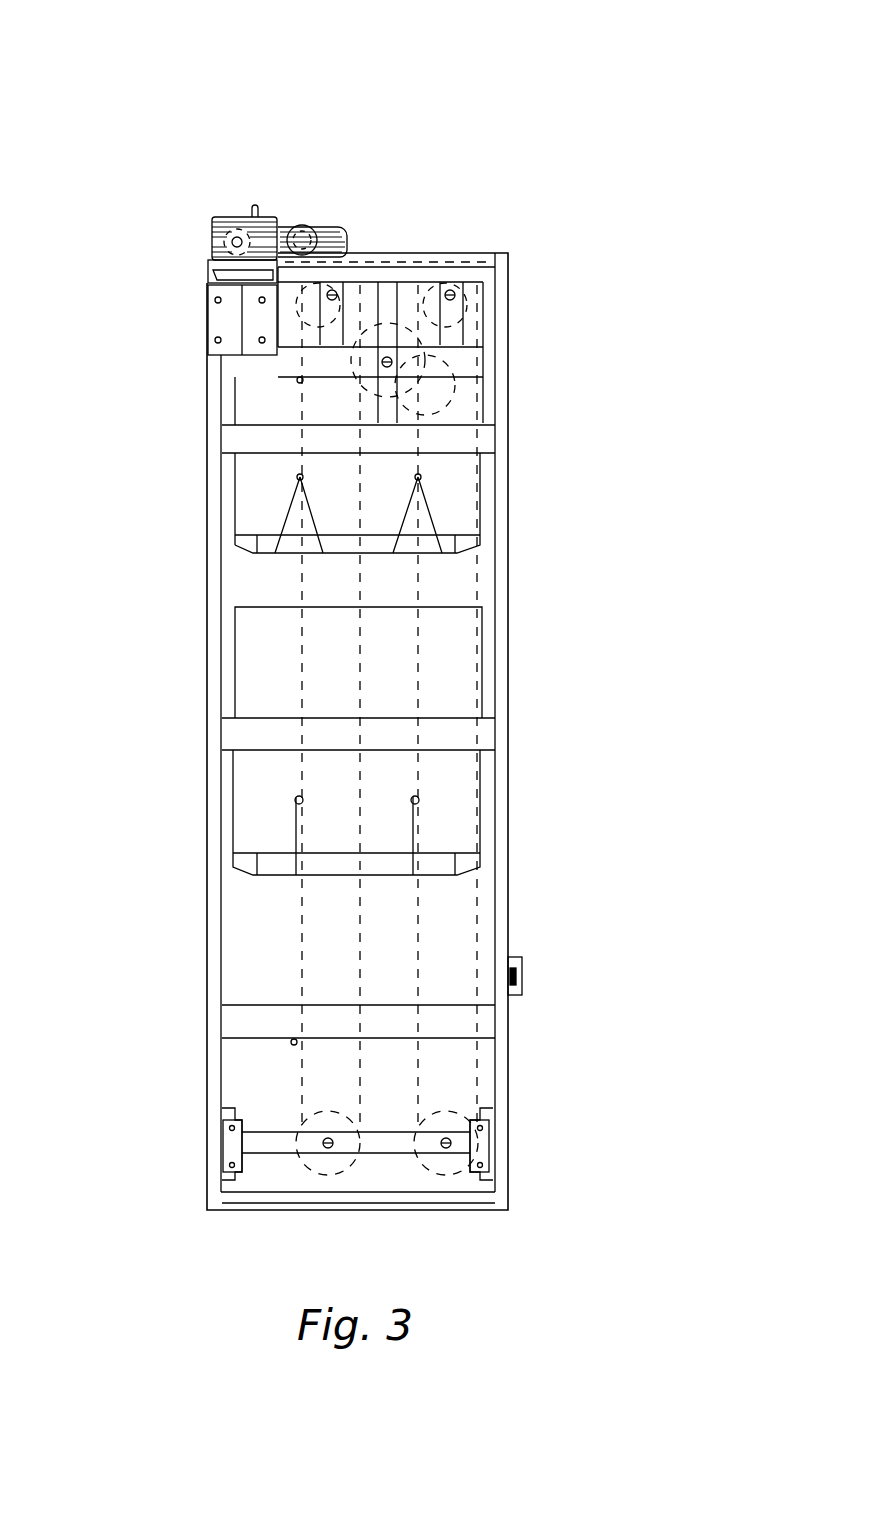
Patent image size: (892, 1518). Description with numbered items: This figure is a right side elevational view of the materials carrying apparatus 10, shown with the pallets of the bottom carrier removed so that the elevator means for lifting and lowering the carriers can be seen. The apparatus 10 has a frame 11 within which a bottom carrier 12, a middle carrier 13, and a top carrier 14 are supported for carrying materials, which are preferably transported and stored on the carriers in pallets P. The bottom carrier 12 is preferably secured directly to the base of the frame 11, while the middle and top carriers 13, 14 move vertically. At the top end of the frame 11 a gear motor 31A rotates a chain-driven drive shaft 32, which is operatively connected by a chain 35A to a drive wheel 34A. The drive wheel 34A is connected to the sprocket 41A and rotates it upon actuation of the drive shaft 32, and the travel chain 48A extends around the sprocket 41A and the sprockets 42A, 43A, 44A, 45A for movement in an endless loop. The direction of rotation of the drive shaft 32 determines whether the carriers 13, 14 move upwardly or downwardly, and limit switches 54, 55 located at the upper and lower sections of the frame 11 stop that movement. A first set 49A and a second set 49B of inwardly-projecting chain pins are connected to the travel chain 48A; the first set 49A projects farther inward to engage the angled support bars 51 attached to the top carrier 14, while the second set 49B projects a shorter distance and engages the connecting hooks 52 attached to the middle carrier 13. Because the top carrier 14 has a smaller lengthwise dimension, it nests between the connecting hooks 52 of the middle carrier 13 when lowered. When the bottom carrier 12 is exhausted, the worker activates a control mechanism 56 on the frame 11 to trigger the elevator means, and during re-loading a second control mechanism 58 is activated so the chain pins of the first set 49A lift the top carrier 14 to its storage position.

The materials carrying apparatus 10 is at (172, 138).
The frame 11 is at (213, 643).
The bottom carrier 12 is at (403, 1202).
The middle carrier 13 is at (465, 860).
The top carrier 14 is at (470, 545).
The gear motor 31A is at (231, 217).
The drive shaft 32 is at (302, 225).
The drive wheel 34A is at (420, 383).
The chain 35A is at (392, 290).
The sprocket 41A is at (470, 340).
The sprocket 42A is at (465, 268).
The sprocket 43A is at (300, 335).
The sprocket 44A is at (312, 1177).
The sprocket 45A is at (458, 1177).
The travel chain 48A is at (425, 630).
The first set of chain pins 49A is at (300, 477).
The second set of chain pins 49B is at (302, 797).
The angled support bars 51 is at (390, 523).
The connecting hooks 52 is at (413, 835).
The limit switch 54 is at (292, 378).
The limit switch 55 is at (292, 1043).
The control mechanism 56 is at (522, 963).
The second control mechanism 58 is at (522, 988).
The pallets P is at (233, 480).